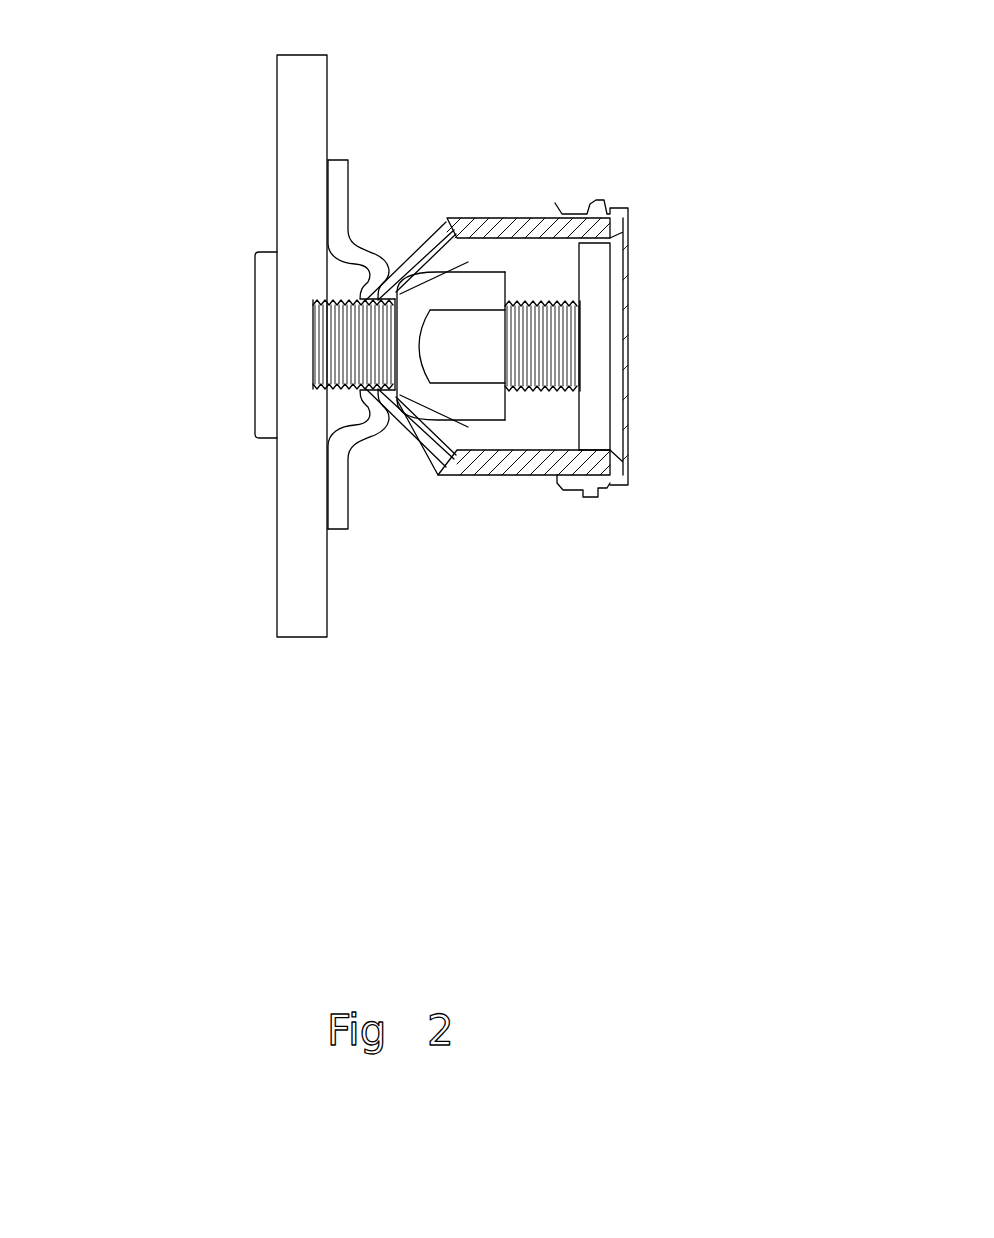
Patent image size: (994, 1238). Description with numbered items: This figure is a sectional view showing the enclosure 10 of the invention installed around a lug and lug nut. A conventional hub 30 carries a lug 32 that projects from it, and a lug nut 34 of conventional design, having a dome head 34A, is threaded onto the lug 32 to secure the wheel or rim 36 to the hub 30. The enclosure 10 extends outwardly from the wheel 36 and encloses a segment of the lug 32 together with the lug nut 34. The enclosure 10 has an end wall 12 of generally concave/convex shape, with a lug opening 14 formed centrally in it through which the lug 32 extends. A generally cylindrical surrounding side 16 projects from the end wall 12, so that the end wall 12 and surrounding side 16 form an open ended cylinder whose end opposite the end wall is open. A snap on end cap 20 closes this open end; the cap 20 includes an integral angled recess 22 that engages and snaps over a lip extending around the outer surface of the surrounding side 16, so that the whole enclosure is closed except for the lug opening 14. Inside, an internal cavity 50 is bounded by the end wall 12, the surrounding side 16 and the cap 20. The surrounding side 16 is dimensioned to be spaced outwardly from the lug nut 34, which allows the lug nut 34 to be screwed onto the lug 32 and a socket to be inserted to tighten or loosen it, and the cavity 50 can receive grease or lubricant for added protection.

The enclosure 10 is at (632, 350).
The end wall 12 is at (415, 432).
The lug opening 14 is at (392, 272).
The surrounding side 16 is at (527, 222).
The snap on end cap 20 is at (632, 206).
The angled recess 22 is at (612, 483).
The hub 30 is at (277, 523).
The lug 32 is at (257, 253).
The lug nut 34 is at (503, 420).
The dome head 34A is at (415, 372).
The wheel 36 is at (360, 240).
The internal cavity 50 is at (538, 284).